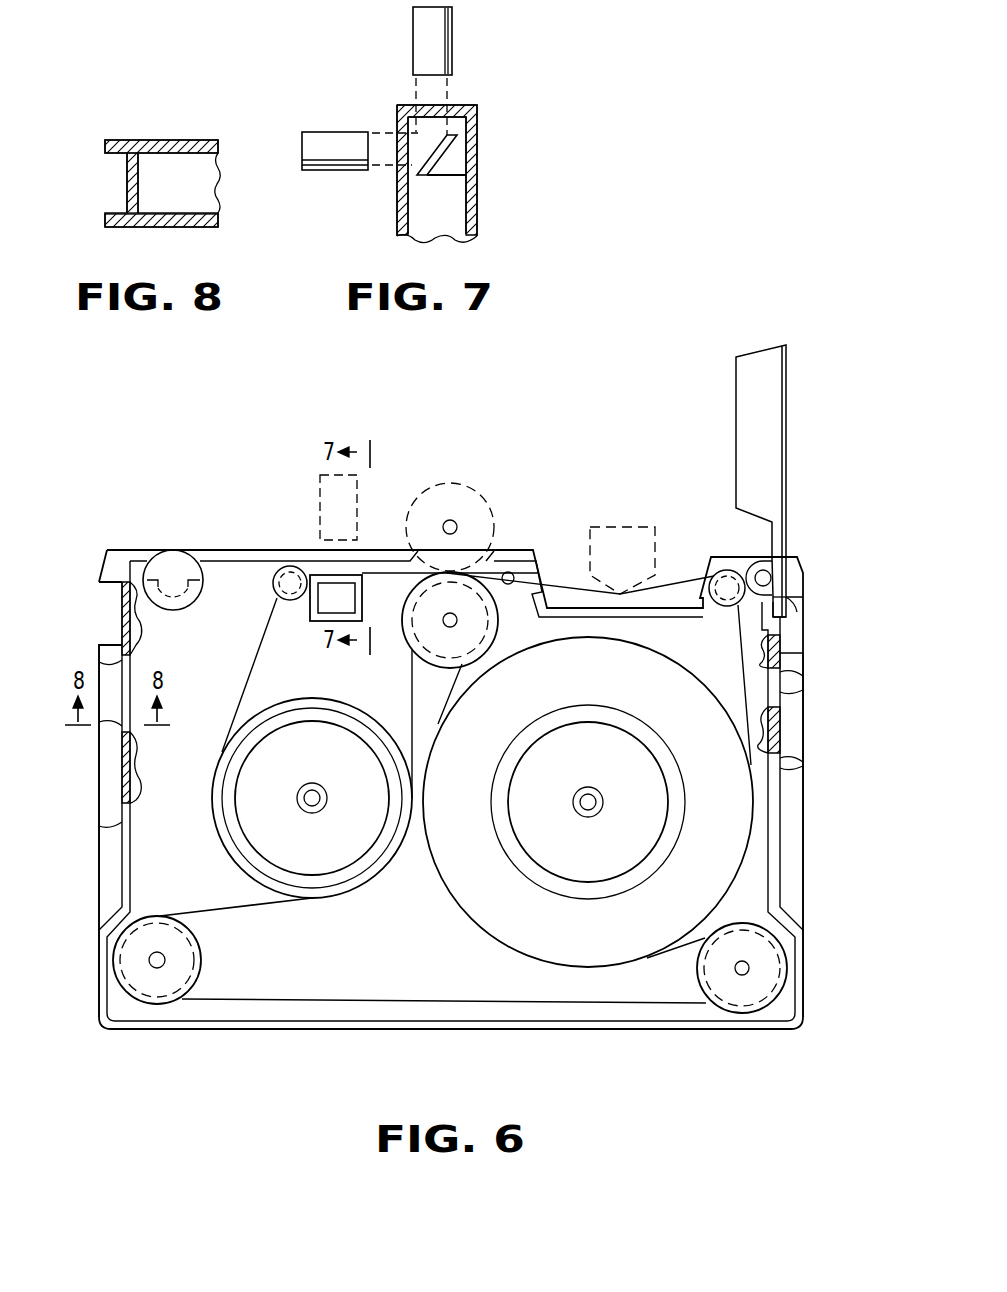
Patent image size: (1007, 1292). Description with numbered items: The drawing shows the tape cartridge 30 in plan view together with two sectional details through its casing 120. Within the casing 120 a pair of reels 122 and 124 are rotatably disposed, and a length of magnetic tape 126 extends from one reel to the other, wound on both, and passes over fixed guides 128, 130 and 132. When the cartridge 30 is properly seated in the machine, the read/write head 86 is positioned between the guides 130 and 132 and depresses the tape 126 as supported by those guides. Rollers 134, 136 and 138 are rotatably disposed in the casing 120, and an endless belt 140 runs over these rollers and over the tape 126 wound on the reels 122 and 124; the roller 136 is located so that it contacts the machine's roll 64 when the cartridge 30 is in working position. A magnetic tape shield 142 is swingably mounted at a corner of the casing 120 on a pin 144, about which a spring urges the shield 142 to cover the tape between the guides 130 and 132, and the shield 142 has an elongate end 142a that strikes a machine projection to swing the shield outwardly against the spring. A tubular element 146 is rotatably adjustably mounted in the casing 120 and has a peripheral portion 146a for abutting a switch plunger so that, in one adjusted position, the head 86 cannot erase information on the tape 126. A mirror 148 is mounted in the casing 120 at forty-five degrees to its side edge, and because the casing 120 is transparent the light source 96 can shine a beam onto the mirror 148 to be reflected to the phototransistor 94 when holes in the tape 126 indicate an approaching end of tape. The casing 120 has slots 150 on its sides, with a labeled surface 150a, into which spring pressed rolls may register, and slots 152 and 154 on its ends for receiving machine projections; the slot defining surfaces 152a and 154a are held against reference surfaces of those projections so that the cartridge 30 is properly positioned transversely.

In FIG. 6, the cartridge 30 is at (803, 878).
In FIG. 6, the roll 64 is at (494, 514).
In FIG. 6, the read/write head 86 is at (596, 526).
In FIG. 7, the phototransistor 94 is at (452, 49).
In FIG. 6, the phototransistor 94 is at (320, 478).
In FIG. 7, the light source 96 is at (330, 132).
In FIG. 6, the casing 120 is at (204, 1030).
In FIG. 6, the reel 122 is at (214, 795).
In FIG. 6, the reel 124 is at (584, 899).
In FIG. 6, the magnetic tape 126 is at (252, 664).
In FIG. 6, the fixed guide 128 is at (290, 565).
In FIG. 6, the fixed guide 130 is at (509, 585).
In FIG. 6, the fixed guide 132 is at (723, 607).
In FIG. 6, the roller 134 is at (202, 966).
In FIG. 6, the roller 136 is at (408, 645).
In FIG. 6, the roller 138 is at (697, 977).
In FIG. 6, the endless belt 140 is at (218, 912).
In FIG. 6, the magnetic tape shield 142 is at (736, 431).
In FIG. 6, the elongate end 142a is at (780, 620).
In FIG. 6, the pin 144 is at (757, 567).
In FIG. 6, the tubular element 146 is at (204, 577).
In FIG. 6, the peripheral portion 146a is at (173, 603).
In FIG. 7, the mirror 148 is at (417, 173).
In FIG. 6, the mirror 148 is at (328, 613).
In FIG. 6, the slot 150 is at (110, 624).
In FIG. 6, the rail surface 150a is at (110, 584).
In FIG. 6, the slot 152 is at (804, 797).
In FIG. 6, the slot defining surface 152a is at (796, 716).
In FIG. 8, the slot 154 is at (112, 178).
In FIG. 6, the slot 154 is at (99, 845).
In FIG. 8, the slot defining surface 154a is at (107, 214).
In FIG. 6, the slot defining surface 154a is at (110, 763).